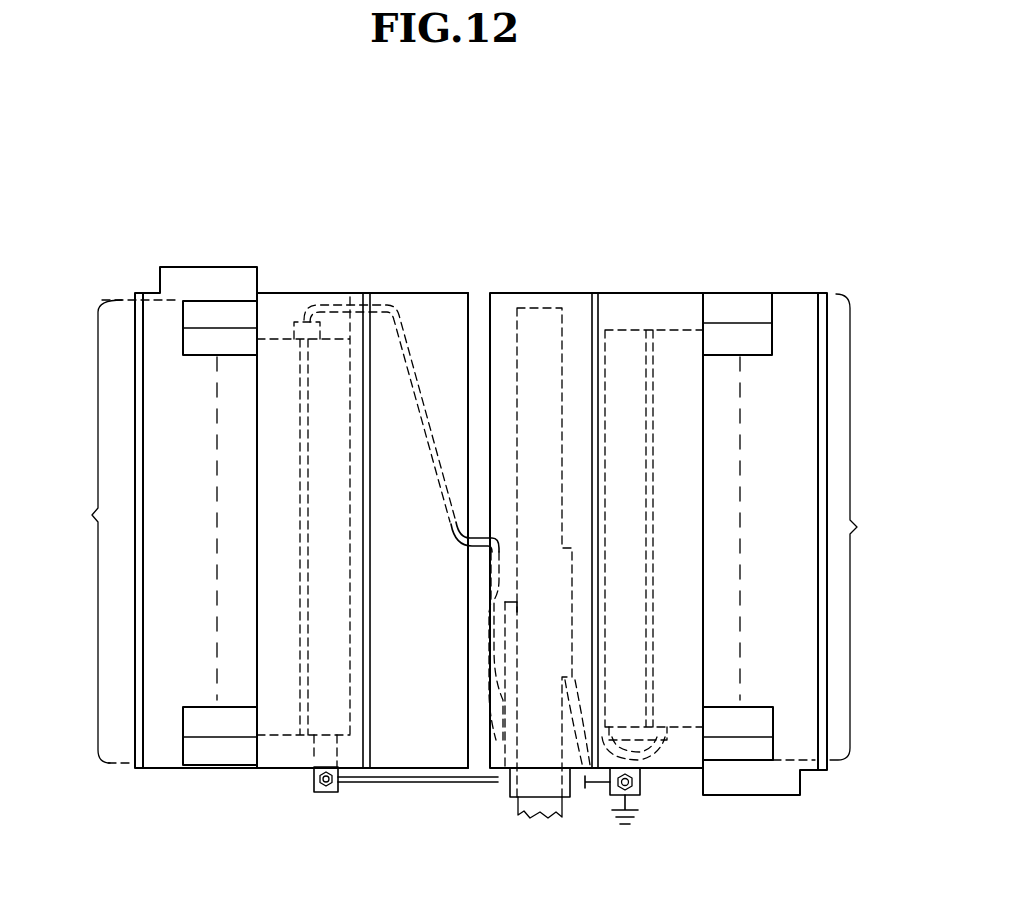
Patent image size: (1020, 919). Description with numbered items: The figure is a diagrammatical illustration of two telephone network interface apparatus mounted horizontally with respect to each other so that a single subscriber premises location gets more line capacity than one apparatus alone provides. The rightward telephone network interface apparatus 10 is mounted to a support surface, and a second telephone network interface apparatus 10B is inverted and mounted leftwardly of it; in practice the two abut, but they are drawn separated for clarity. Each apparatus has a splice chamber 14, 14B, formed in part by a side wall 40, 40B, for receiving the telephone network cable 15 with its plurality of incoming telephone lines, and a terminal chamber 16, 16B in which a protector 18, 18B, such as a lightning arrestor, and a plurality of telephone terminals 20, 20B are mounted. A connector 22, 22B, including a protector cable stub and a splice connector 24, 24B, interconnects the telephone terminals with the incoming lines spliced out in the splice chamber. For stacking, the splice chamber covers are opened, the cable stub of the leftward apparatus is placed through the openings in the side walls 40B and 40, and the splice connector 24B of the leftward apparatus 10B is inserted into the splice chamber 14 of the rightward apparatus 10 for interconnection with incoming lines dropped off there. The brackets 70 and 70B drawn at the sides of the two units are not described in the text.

The telephone network interface apparatus 10 is at (838, 250).
The telephone network interface apparatus 10B is at (218, 243).
The splice chamber 14 is at (503, 317).
The splice chamber 14B is at (432, 318).
The telephone network cable 15 is at (563, 323).
The terminal chamber 16 is at (680, 302).
The terminal chamber 16B is at (277, 307).
The protector 18 is at (632, 345).
The protector 18B is at (333, 710).
The telephone terminals 20 is at (672, 368).
The telephone terminals 20B is at (278, 748).
The connector 22 is at (657, 750).
The connector 22B is at (420, 366).
The splice connector 24 is at (585, 766).
The splice connector 24B is at (500, 780).
The side wall 40 is at (490, 725).
The side wall 40B is at (468, 323).
The bracket 70 is at (870, 527).
The mating bracket 70B is at (78, 515).